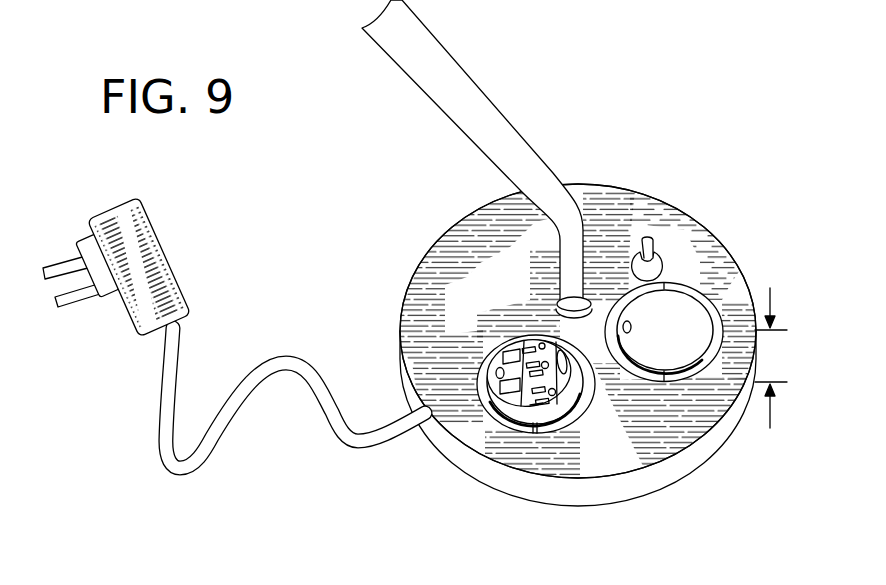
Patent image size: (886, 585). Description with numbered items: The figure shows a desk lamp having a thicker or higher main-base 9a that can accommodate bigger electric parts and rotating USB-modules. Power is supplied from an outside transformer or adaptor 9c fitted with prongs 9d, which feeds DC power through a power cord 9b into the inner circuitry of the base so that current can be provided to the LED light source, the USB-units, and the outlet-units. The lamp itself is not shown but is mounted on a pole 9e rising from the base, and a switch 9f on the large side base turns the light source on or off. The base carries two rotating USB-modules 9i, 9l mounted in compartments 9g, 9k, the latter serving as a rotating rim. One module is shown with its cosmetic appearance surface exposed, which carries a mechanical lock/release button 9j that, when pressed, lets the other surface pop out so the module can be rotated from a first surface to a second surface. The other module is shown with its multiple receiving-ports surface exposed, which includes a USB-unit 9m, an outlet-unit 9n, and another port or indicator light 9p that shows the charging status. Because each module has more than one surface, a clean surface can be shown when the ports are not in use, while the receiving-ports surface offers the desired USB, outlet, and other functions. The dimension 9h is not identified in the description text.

The main-base 9a is at (637, 448).
The power cord 9b is at (290, 358).
The transformer or adaptor 9c is at (152, 220).
The prongs 9d is at (63, 307).
The pole 9e is at (580, 243).
The switch 9f is at (653, 240).
The compartment 9g is at (697, 292).
The recess depth 9h is at (771, 372).
The rotating USB-module 9i is at (698, 322).
The lock/release button 9j is at (629, 331).
The rotating rim 9k is at (577, 418).
The module 9l is at (558, 350).
The USB-unit 9m is at (498, 355).
The outlet-unit 9n is at (533, 398).
The indicator light 9p is at (496, 371).